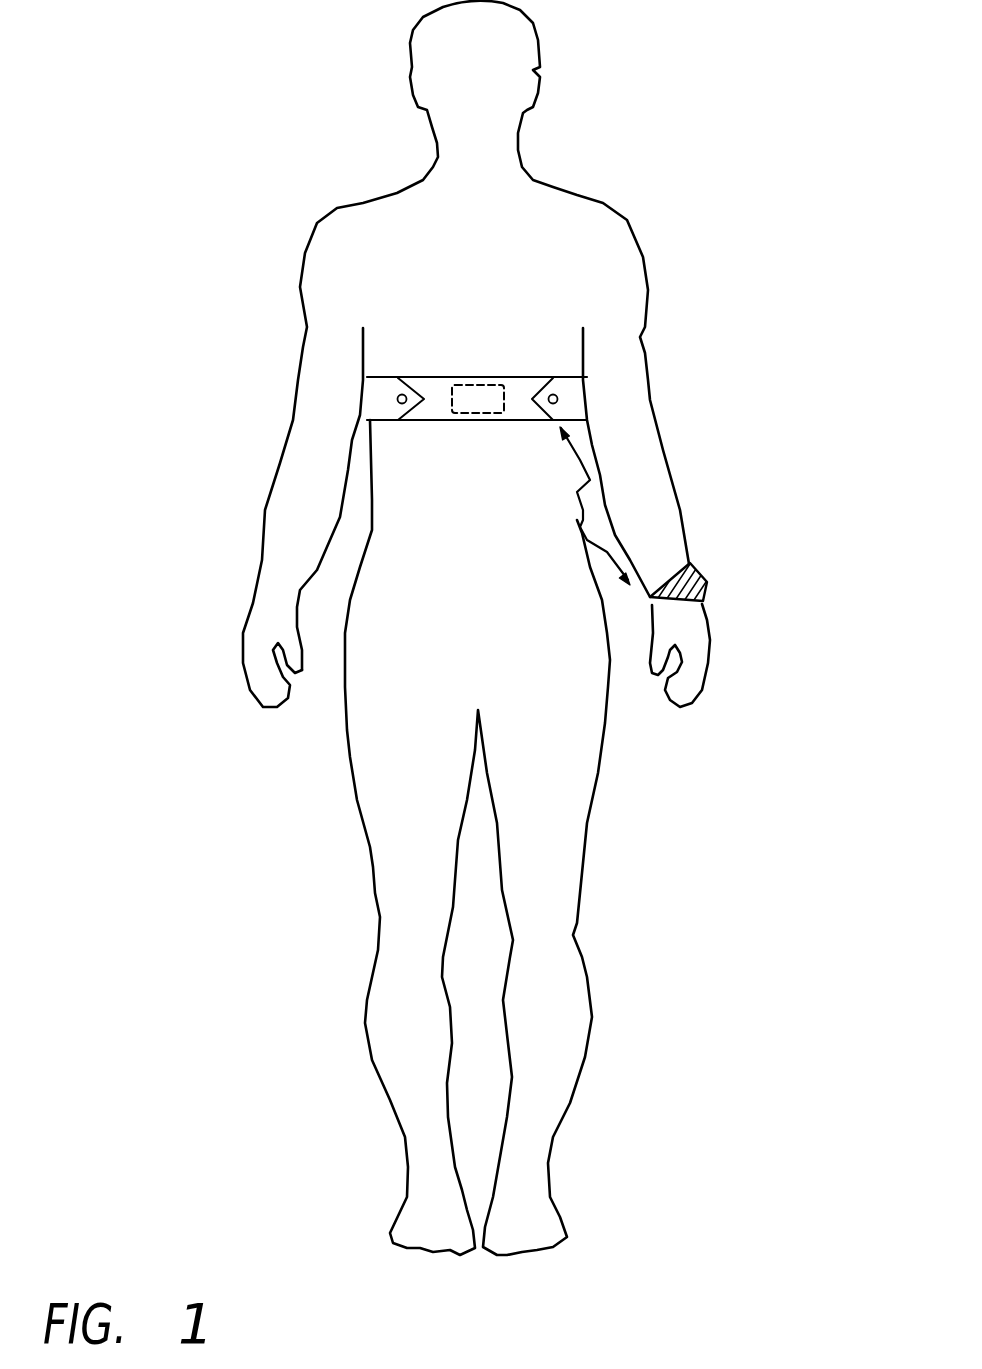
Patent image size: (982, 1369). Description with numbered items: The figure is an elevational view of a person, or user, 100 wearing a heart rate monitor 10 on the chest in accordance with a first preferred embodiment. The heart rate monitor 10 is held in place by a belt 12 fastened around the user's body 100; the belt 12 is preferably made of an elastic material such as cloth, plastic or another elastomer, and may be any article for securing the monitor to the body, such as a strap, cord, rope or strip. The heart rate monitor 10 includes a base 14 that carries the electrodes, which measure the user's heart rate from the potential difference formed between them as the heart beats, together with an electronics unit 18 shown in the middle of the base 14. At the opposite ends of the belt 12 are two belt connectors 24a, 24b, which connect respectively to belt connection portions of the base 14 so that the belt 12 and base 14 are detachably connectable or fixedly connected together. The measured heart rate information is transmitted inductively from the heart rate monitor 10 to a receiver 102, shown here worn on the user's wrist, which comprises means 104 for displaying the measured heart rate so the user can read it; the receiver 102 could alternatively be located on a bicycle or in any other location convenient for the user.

The heart rate monitor 10 is at (557, 410).
The belt 12 is at (572, 403).
The base 14 is at (437, 387).
The electronics unit 18 is at (460, 413).
The belt connector 24a is at (402, 404).
The belt connector 24b is at (553, 404).
The person 100 is at (560, 318).
The receiver 102 is at (687, 582).
The means for displaying the measured heart rate 104 is at (700, 590).